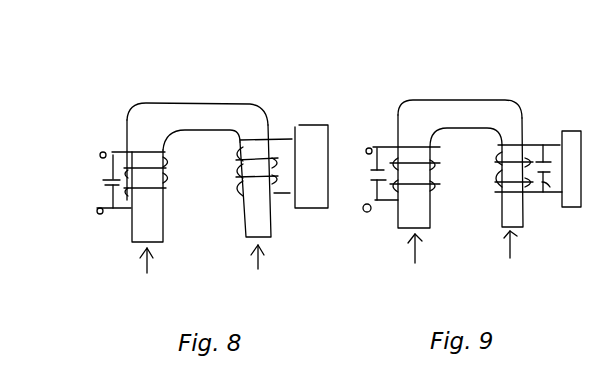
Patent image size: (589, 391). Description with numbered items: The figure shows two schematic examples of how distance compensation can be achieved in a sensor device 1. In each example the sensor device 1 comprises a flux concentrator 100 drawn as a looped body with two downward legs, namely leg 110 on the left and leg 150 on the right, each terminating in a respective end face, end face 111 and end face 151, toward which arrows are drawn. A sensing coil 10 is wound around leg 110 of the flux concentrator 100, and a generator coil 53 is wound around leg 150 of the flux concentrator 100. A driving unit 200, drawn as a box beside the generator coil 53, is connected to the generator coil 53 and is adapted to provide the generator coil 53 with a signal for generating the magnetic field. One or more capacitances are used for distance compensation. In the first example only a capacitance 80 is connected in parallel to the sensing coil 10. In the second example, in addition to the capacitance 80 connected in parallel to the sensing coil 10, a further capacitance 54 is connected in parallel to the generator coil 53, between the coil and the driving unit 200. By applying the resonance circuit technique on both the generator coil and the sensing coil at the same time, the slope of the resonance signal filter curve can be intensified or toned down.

In FIG. 8, the sensor device 1 is at (148, 80).
In FIG. 9, the sensor device 1 is at (437, 80).
In FIG. 8, the sensing coil 10 is at (143, 150).
In FIG. 9, the sensing coil 10 is at (415, 143).
In FIG. 8, the generator coil 53 is at (256, 140).
In FIG. 9, the generator coil 53 is at (505, 140).
In FIG. 9, the capacitance 54 is at (552, 190).
In FIG. 8, the capacitance 80 is at (97, 181).
In FIG. 9, the capacitance 80 is at (361, 176).
In FIG. 8, the flux concentrator 100 is at (182, 113).
In FIG. 9, the flux concentrator 100 is at (457, 110).
In FIG. 8, the leg 110 is at (147, 222).
In FIG. 9, the leg 110 is at (411, 217).
In FIG. 8, the end face 111 is at (135, 276).
In FIG. 9, the end face 111 is at (408, 264).
In FIG. 8, the leg 150 is at (258, 219).
In FIG. 9, the leg 150 is at (510, 213).
In FIG. 8, the end face 151 is at (253, 274).
In FIG. 9, the end face 151 is at (509, 264).
In FIG. 8, the driving unit 200 is at (310, 137).
In FIG. 9, the driving unit 200 is at (566, 133).